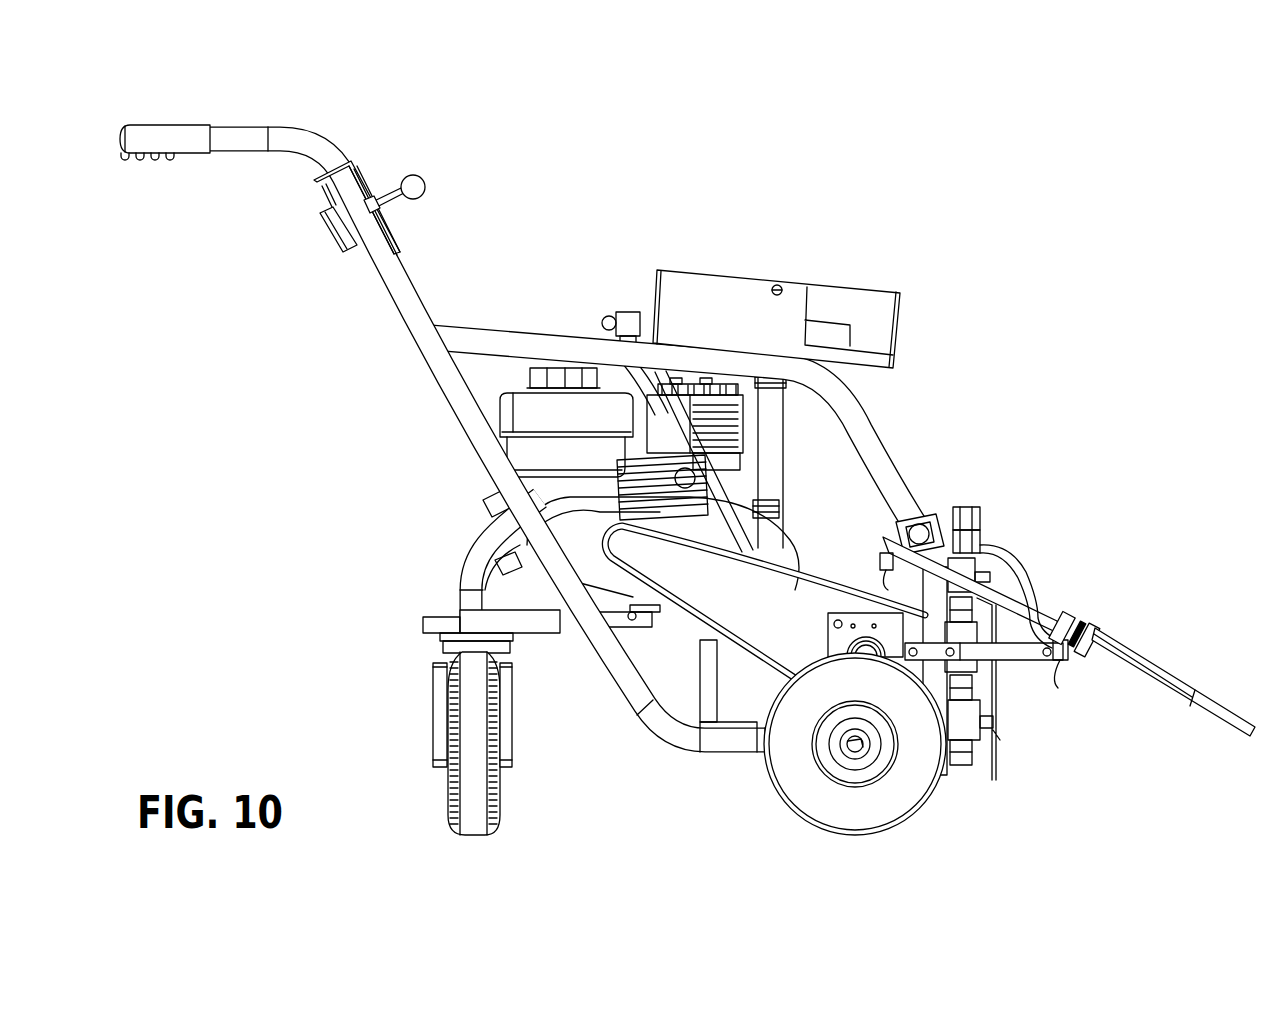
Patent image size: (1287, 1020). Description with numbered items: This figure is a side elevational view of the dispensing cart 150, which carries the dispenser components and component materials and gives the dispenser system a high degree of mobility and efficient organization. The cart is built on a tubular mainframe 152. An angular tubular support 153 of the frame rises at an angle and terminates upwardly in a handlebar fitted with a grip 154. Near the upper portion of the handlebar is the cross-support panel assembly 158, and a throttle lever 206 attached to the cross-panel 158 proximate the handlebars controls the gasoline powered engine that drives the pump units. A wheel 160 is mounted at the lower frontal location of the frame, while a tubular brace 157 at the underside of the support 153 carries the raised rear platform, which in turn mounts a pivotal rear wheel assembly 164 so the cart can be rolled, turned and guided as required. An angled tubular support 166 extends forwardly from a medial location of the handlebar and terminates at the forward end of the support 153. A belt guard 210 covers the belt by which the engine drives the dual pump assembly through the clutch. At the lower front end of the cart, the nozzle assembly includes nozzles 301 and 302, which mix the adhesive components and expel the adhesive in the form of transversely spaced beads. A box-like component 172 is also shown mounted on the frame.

The cart 150 is at (679, 165).
The tubular mainframe 152 is at (437, 303).
The angular tubular support 153 is at (400, 292).
The grip 154 is at (160, 124).
The tubular brace 157 is at (480, 563).
The upper cross-support panel assembly 158 is at (350, 168).
The wheel 160 is at (775, 795).
The pivotal rear wheel assembly 164 is at (436, 708).
The angled tubular support 166 is at (860, 432).
The control box 172 is at (678, 308).
The throttle lever 206 is at (385, 197).
The belt guard 210 is at (686, 622).
The nozzle 301 is at (915, 517).
The nozzle 302 is at (1178, 674).